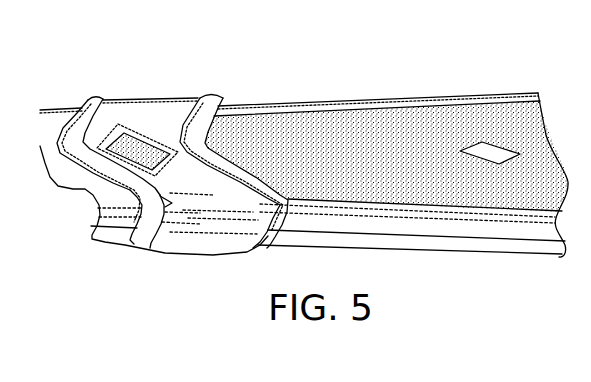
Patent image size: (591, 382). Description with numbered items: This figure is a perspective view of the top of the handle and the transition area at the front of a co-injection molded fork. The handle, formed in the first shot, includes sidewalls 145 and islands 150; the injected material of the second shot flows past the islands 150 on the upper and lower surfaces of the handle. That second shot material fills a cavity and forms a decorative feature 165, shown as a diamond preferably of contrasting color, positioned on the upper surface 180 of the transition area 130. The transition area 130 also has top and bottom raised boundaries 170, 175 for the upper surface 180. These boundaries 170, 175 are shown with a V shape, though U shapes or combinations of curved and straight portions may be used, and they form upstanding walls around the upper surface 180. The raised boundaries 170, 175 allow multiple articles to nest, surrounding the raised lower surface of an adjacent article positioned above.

The transition portion 130 is at (164, 189).
The sidewalls 145 is at (458, 244).
The islands 150 is at (487, 153).
The decorative feature 165 is at (137, 150).
The top raised boundary 170 is at (85, 112).
The bottom raised boundary 175 is at (195, 110).
The upper surface 180 is at (183, 182).